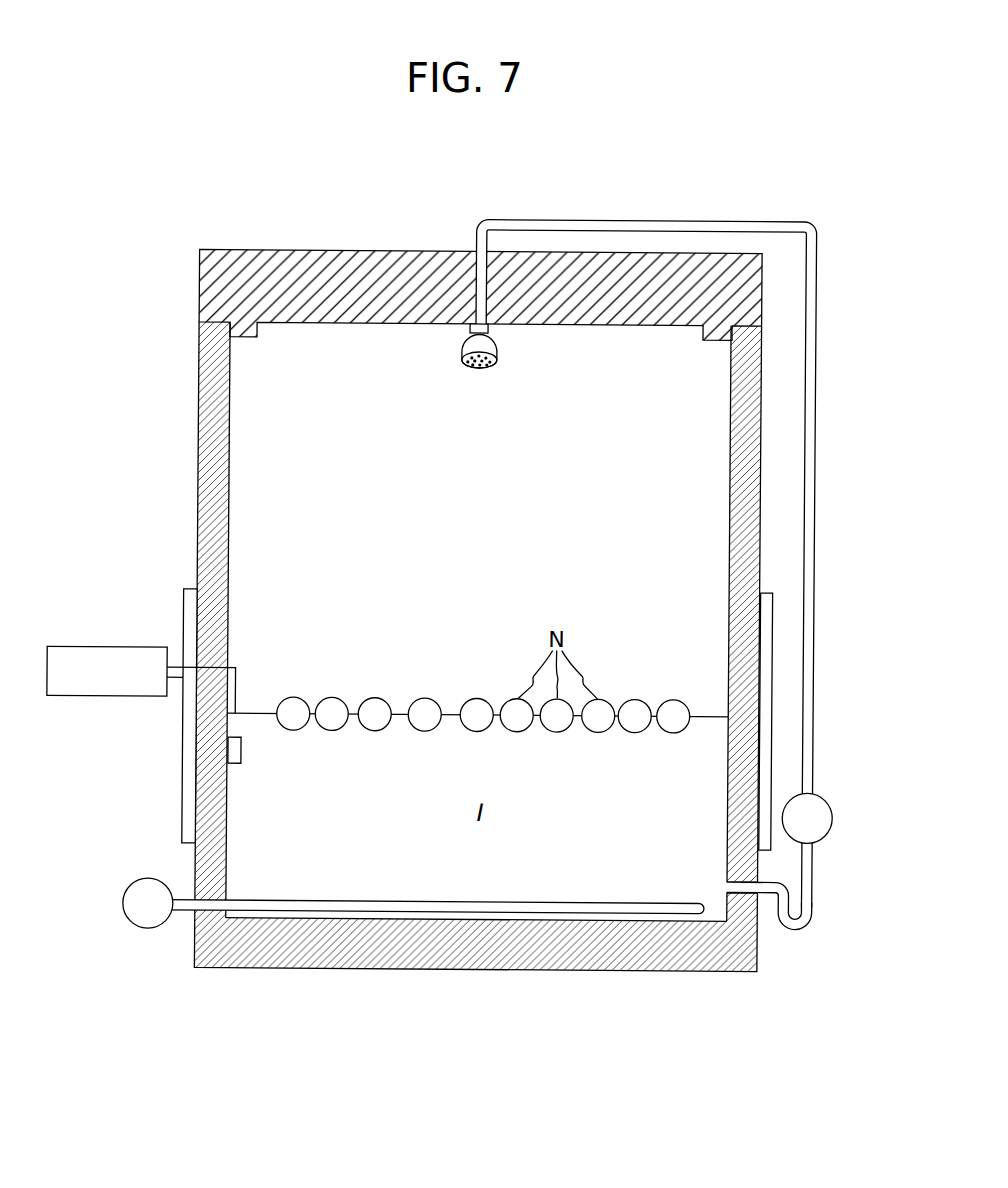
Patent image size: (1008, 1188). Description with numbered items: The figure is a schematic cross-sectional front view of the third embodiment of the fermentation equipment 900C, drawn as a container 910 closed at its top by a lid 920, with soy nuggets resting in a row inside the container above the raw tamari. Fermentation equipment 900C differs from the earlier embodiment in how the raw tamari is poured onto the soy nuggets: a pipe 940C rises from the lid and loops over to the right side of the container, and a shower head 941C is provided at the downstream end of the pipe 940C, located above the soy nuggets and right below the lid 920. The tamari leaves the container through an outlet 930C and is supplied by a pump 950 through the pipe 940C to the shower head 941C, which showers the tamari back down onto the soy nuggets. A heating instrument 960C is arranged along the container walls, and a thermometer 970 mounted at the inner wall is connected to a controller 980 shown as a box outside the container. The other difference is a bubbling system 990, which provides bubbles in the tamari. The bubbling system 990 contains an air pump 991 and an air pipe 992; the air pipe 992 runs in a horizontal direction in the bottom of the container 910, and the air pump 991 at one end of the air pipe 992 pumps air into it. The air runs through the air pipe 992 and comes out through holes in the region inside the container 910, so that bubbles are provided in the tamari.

The fermentation equipment 900C is at (412, 541).
The container 910 is at (196, 970).
The lid 920 is at (197, 262).
The outlet 930C is at (724, 880).
The pipe 940C is at (755, 218).
The shower head 941C is at (458, 354).
The pump 950 is at (819, 794).
The heating instrument 960C is at (183, 614).
The thermometer 970 is at (243, 750).
The controller 980 is at (100, 650).
The bubbling system 990 is at (368, 912).
The air pump 991 is at (152, 881).
The air pipe 992 is at (354, 901).